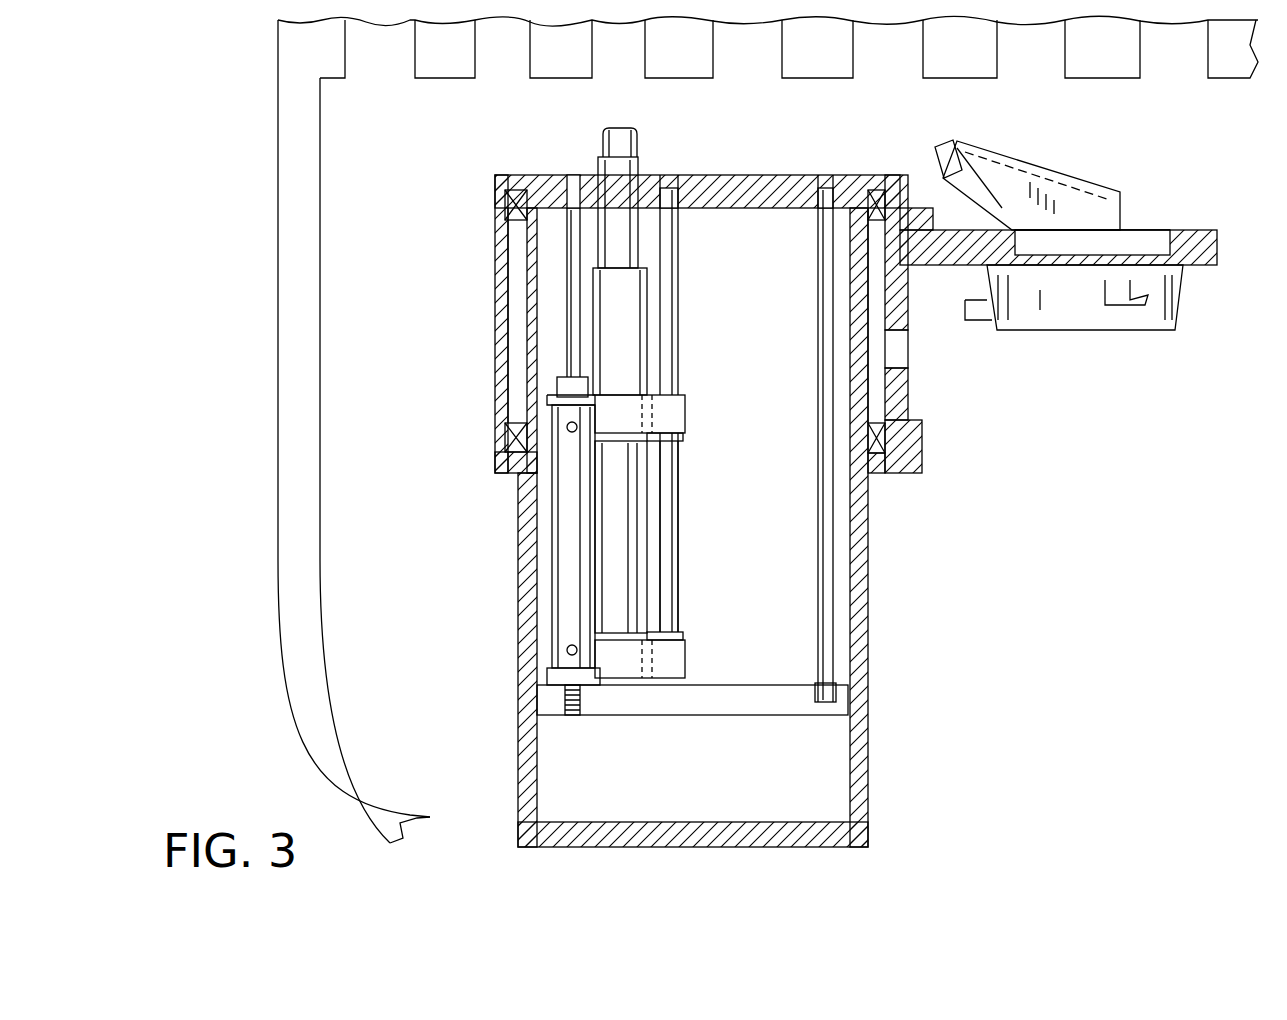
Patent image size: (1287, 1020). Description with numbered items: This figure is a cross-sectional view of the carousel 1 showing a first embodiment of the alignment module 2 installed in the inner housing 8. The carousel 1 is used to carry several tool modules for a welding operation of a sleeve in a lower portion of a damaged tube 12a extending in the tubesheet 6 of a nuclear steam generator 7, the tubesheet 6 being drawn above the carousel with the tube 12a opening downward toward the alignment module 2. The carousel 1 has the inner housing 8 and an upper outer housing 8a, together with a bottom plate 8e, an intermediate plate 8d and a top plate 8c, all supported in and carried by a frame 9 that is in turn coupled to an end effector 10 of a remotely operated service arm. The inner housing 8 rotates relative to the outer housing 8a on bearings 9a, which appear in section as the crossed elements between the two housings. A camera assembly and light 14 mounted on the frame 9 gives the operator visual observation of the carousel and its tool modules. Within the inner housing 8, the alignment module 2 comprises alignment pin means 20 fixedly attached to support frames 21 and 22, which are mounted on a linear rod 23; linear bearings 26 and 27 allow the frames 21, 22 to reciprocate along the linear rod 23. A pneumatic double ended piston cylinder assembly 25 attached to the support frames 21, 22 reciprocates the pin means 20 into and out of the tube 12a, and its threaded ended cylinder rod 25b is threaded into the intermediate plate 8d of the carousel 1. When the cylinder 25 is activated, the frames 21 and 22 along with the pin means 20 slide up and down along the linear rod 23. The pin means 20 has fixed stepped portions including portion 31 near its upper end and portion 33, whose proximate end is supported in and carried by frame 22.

The carousel 1 is at (872, 772).
The alignment module 2 is at (690, 522).
The tubesheet 6 is at (335, 69).
The nuclear steam generator 7 is at (308, 367).
The inner housing 8 is at (868, 625).
The upper outer housing 8a is at (908, 385).
The top plate 8c is at (722, 848).
The intermediate plate 8d is at (745, 710).
The bottom plate 8e is at (778, 182).
The frame 9 is at (1190, 235).
The bearings 9a is at (505, 205).
The end effector 10 is at (1185, 300).
The tube 12a is at (640, 66).
The camera assembly and light 14 is at (1045, 165).
The alignment pin means 20 is at (630, 406).
The support frame 21 is at (688, 410).
The support frame 22 is at (688, 662).
The linear rod 23 is at (670, 282).
The pneumatic double ended piston cylinder assembly 25 is at (570, 568).
The threaded ended cylinder rod 25b is at (572, 347).
The linear bearing 26 is at (688, 438).
The linear bearing 27 is at (680, 632).
The fixed stepped portion 31 is at (628, 145).
The fixed stepped portion 33 is at (632, 345).